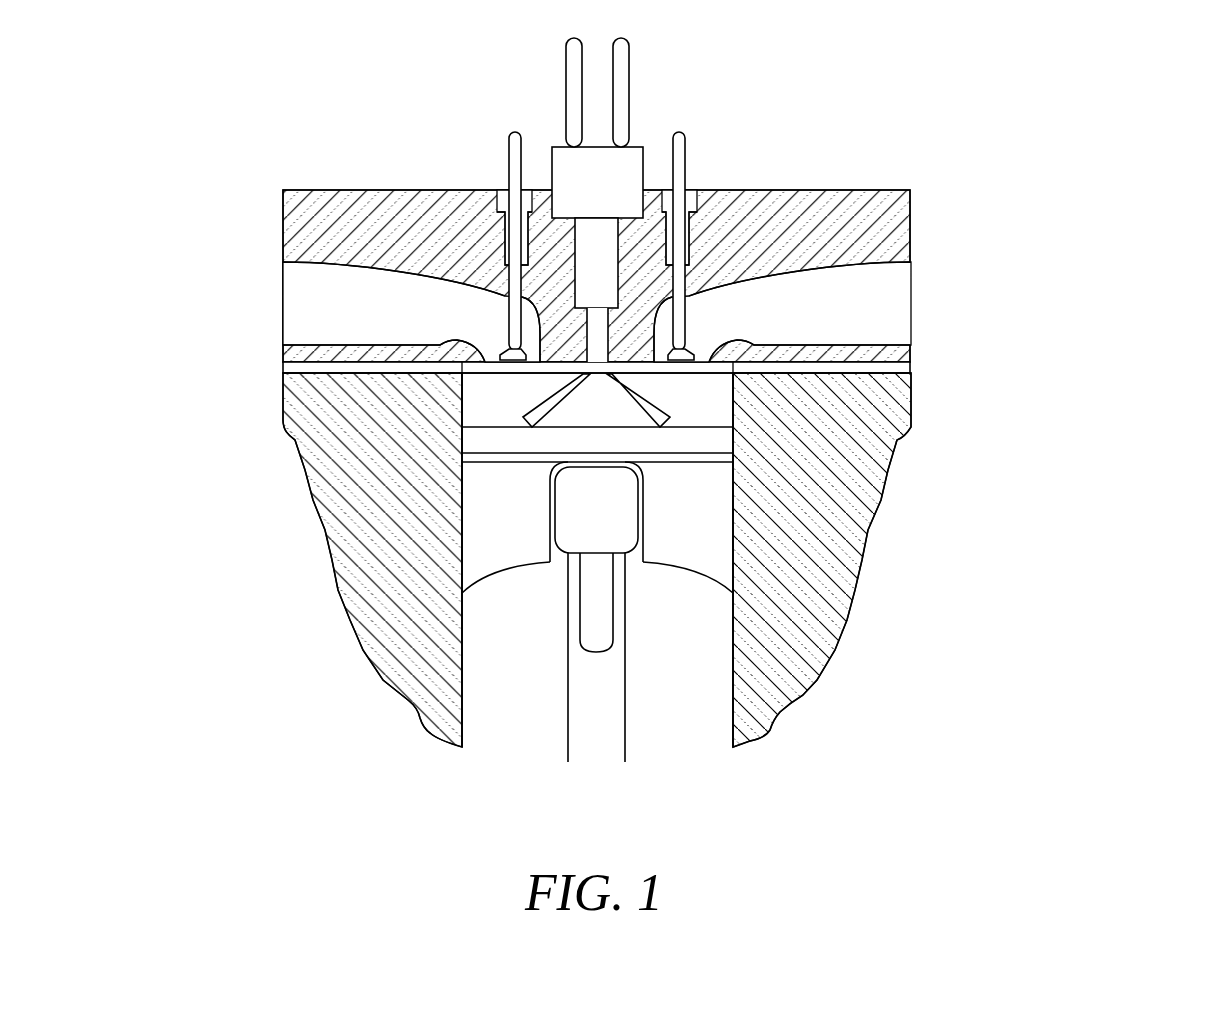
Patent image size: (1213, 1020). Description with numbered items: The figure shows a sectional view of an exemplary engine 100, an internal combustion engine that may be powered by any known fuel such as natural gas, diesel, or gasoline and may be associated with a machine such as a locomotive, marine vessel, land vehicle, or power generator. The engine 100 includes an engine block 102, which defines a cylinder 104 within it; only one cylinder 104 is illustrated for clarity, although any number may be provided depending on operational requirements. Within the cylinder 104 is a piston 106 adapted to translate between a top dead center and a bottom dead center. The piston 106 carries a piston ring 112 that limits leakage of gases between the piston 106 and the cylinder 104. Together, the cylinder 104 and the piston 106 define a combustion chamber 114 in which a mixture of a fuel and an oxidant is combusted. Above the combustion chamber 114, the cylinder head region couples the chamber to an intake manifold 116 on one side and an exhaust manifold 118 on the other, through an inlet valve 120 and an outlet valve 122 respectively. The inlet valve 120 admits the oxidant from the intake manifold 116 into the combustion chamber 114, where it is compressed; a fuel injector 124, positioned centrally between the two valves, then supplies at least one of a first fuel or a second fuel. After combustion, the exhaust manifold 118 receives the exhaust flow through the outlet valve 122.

The engine 100 is at (1082, 100).
The engine block 102 is at (875, 498).
The cylinder 104 is at (497, 703).
The piston 106 is at (483, 525).
The piston ring 112 is at (475, 457).
The combustion chamber 114 is at (482, 405).
The intake manifold 116 is at (308, 307).
The exhaust manifold 118 is at (886, 307).
The inlet valve 120 is at (507, 165).
The outlet valve 122 is at (688, 166).
The fuel injector 124 is at (598, 265).